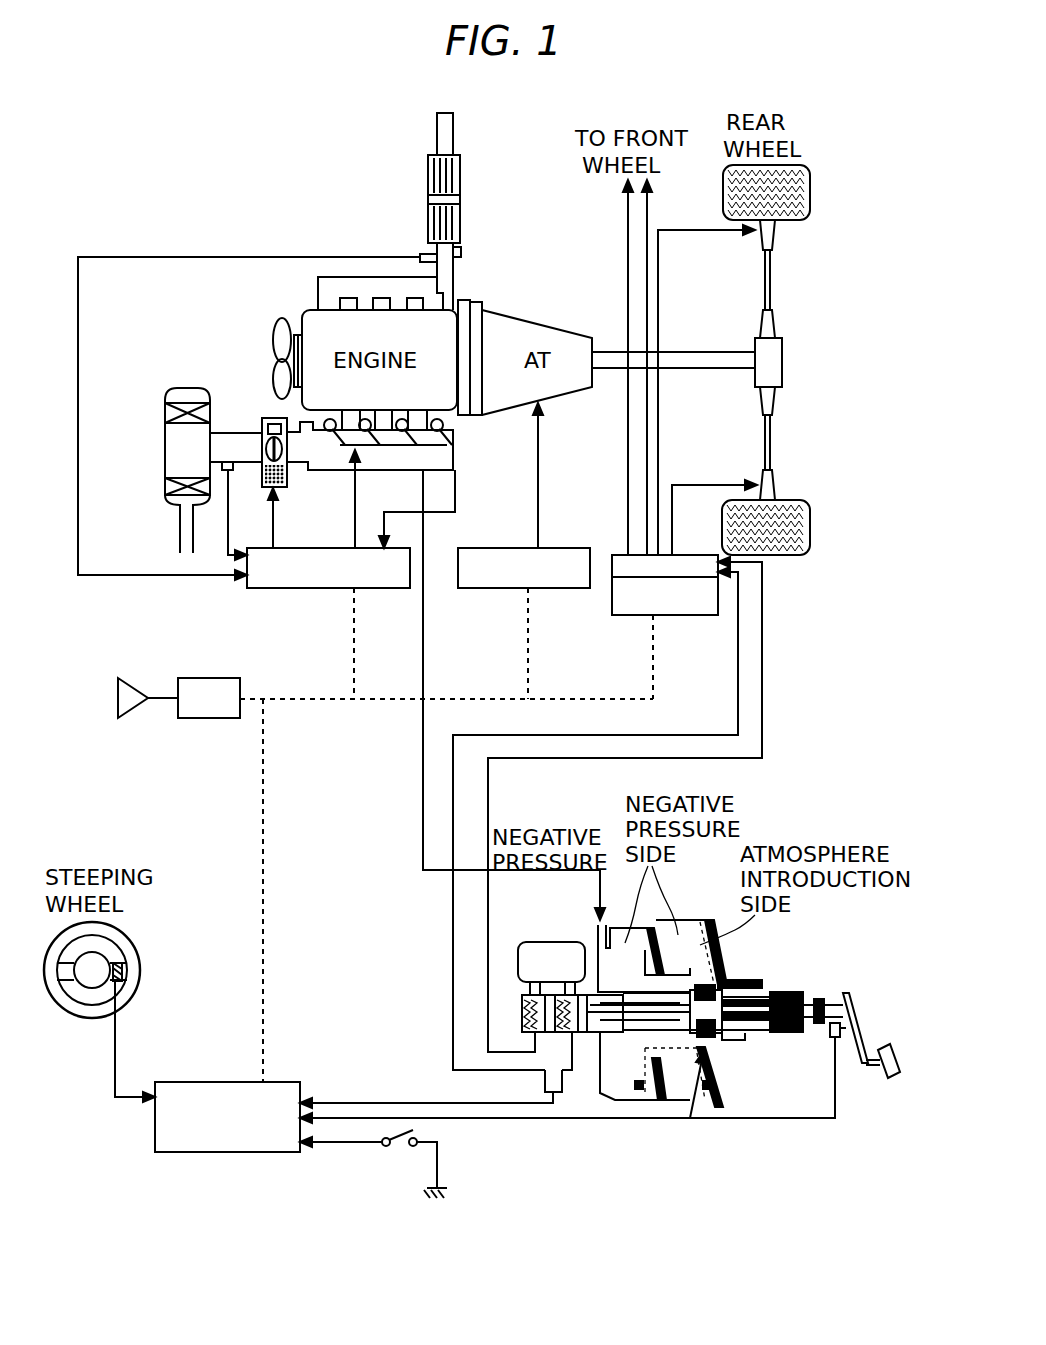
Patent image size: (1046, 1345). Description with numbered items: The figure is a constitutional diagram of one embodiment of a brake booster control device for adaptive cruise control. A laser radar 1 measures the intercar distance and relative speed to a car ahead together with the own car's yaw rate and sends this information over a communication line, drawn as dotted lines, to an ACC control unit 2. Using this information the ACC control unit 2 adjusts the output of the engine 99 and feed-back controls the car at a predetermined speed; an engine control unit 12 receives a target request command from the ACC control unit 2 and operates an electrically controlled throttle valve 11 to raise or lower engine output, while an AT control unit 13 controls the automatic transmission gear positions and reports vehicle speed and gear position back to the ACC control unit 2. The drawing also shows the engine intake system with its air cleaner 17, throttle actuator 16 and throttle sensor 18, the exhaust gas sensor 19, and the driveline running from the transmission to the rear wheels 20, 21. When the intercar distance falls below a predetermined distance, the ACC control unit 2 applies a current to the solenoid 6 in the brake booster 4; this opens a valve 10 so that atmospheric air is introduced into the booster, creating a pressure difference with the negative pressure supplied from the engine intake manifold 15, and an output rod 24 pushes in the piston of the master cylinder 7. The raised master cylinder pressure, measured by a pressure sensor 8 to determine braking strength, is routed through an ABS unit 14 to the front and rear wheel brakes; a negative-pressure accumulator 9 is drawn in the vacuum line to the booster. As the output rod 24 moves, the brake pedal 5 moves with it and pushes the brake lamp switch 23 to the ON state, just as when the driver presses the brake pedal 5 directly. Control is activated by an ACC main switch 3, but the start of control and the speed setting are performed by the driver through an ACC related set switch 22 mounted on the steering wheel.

The laser radar 1 is at (195, 718).
The ACC control unit 2 is at (218, 1082).
The ACC main switch 3 is at (394, 1150).
The brake booster 4 is at (697, 917).
The brake pedal 5 is at (895, 1078).
The solenoid (electromagnetic valve) 6 is at (733, 1043).
The master cylinder 7 is at (578, 1035).
The pressure sensor 8 is at (545, 1082).
The accumulator 9 is at (555, 942).
The valve 10 is at (770, 1000).
The electrically controlled throttle valve 11 is at (260, 416).
The engine control unit 12 is at (268, 588).
The AT control unit 13 is at (473, 588).
The ABS unit 14 is at (680, 615).
The engine intake manifold 15 is at (438, 470).
The throttle actuator 16 is at (420, 254).
The air cleaner 17 is at (428, 178).
The throttle sensor 18 is at (461, 252).
The exhaust gas sensor 19 is at (232, 470).
The rear wheel 20 is at (790, 500).
The rear wheel 21 is at (785, 222).
The ACC related set switch 22 is at (122, 968).
The brake lamp switch 23 is at (833, 1040).
The output rod 24 is at (643, 1017).
The engine 99 is at (302, 310).